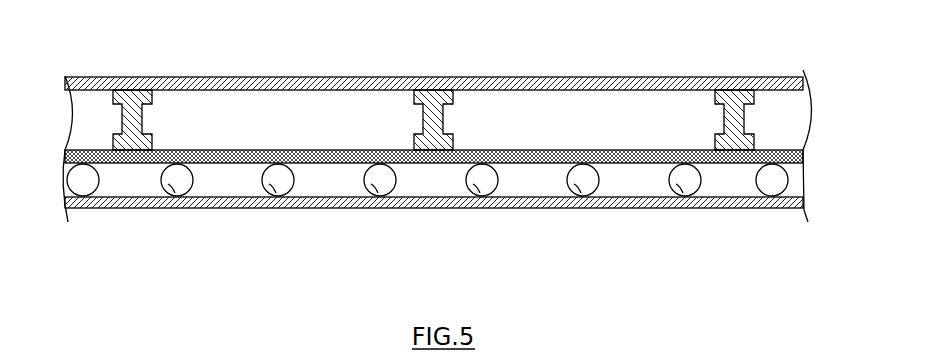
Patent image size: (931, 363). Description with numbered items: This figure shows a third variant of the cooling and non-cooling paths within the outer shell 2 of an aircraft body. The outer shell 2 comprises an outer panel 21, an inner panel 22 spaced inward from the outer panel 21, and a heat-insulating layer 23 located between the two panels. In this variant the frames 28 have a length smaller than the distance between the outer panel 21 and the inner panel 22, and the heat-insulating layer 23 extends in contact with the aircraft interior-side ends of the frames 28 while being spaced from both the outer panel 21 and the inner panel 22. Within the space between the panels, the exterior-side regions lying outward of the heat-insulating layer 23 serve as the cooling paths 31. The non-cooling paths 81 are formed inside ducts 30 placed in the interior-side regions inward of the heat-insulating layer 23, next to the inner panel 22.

The outer shell 2 is at (120, 50).
The outer panel 21 is at (350, 76).
The inner panel 22 is at (335, 209).
The heat-insulating layer 23 is at (118, 164).
The frames 28 is at (142, 116).
The ducts 30 is at (193, 187).
The cooling paths 31 is at (254, 132).
The non-cooling paths 81 is at (175, 193).